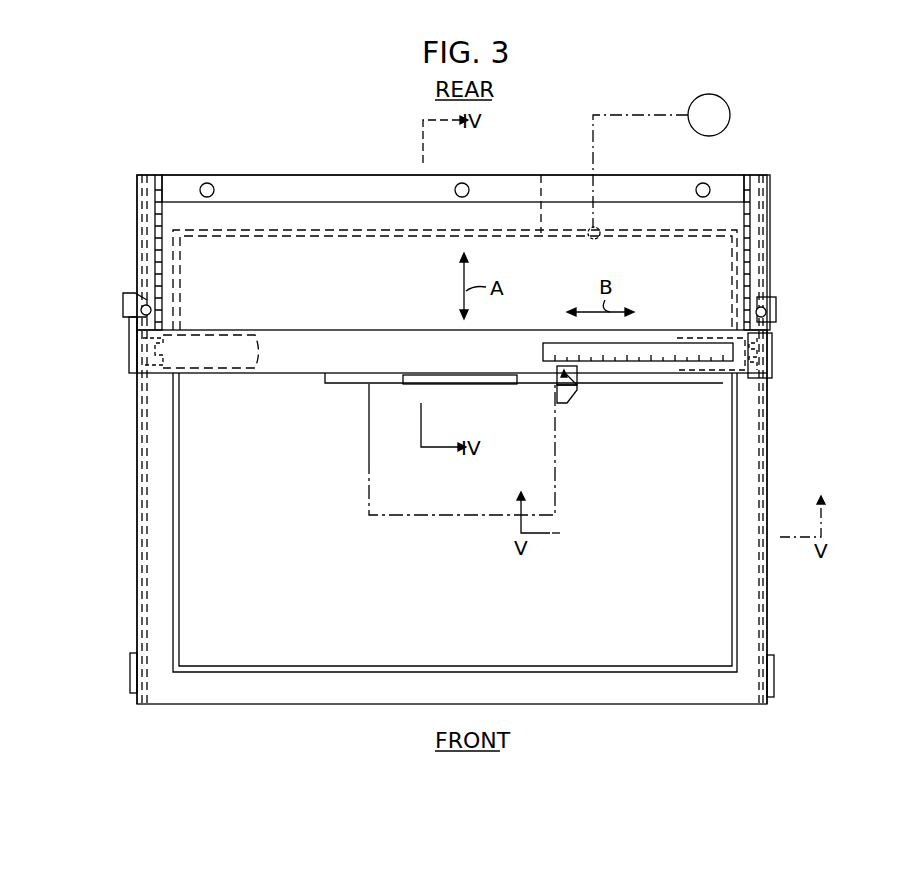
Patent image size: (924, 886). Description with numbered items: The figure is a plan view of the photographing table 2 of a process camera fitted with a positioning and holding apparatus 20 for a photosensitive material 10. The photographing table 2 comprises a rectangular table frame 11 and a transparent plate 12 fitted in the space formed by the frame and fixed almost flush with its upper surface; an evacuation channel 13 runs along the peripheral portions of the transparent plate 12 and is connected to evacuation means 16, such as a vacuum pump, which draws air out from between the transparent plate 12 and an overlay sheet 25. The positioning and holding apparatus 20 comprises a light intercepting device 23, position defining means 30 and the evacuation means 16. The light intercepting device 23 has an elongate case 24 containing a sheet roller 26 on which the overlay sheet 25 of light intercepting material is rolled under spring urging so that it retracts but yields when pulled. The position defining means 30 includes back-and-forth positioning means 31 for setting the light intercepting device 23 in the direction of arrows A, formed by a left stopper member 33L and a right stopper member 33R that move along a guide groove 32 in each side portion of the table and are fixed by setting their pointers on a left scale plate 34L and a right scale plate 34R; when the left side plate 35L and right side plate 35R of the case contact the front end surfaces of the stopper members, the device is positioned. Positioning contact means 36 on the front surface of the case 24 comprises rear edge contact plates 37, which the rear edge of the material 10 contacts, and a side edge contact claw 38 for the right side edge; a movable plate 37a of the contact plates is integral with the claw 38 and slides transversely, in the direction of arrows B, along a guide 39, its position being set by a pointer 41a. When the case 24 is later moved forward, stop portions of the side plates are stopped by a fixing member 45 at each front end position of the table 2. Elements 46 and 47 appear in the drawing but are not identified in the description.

The photographing table 2 is at (238, 704).
The photosensitive material 10 is at (436, 518).
The table frame 11 is at (178, 495).
The transparent plate 12 is at (272, 569).
The evacuation channel 13 is at (541, 175).
The evacuation means 16 is at (725, 128).
The positioning and holding apparatus 20 is at (803, 172).
The light intercepting device 23 is at (700, 294).
The elongate case 24 is at (328, 330).
The overlay sheet 25 is at (164, 256).
The sheet roller 26 is at (227, 335).
The position defining means 30 is at (590, 441).
The back-and-forth positioning means 31 is at (836, 235).
The guide groove 32 is at (143, 600).
The left stopper member 33L is at (124, 300).
The right stopper member 33R is at (775, 298).
The left scale plate 34L is at (152, 200).
The right scale plate 34R is at (752, 262).
The left side plate 35L is at (129, 348).
The right side plate 35R is at (775, 356).
The positioning contact means 36 is at (591, 450).
The rear edge contact plates 37 is at (400, 380).
The movable plate 37a is at (533, 384).
The side edge contact claw 38 is at (568, 395).
The guide 39 is at (668, 375).
The pointer 41a is at (573, 390).
The fixing member 45 is at (130, 665).
The rear bar 46 is at (352, 180).
The mounting hole 47 is at (468, 177).